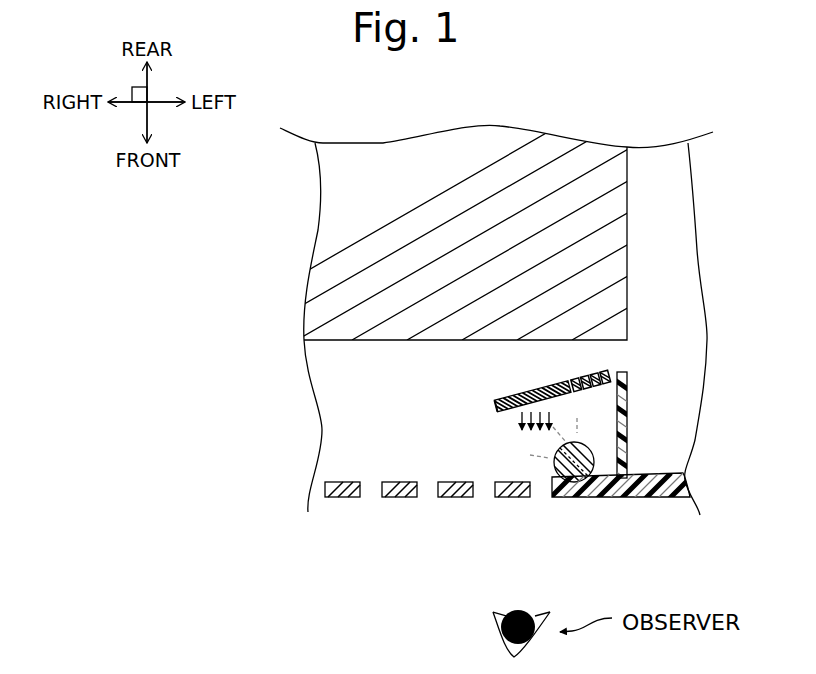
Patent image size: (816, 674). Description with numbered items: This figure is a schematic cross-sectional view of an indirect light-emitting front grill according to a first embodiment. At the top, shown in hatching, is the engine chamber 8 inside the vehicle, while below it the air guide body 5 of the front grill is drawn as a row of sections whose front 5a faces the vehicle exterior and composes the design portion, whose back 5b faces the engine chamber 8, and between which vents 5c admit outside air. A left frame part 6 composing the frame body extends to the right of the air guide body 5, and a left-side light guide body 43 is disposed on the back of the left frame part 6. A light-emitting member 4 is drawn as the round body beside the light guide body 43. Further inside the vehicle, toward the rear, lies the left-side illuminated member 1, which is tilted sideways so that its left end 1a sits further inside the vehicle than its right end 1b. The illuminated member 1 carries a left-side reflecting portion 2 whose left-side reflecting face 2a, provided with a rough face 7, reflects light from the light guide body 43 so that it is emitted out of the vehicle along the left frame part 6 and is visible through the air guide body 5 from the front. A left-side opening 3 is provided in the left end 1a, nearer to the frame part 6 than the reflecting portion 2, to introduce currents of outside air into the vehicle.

The left-side illuminated member 1 is at (548, 381).
The left end 1a is at (612, 367).
The right end 1b is at (494, 406).
The left-side reflecting portion 2 is at (531, 397).
The left-side reflecting face 2a is at (503, 438).
The rough face 7 is at (510, 416).
The left-side opening 3 is at (628, 333).
The light-emitting member 4 is at (603, 446).
The left-side light guide body 43 is at (553, 483).
The air guide body 5 is at (370, 505).
The front 5a is at (399, 501).
The back 5b is at (332, 475).
The vents 5c is at (373, 499).
The left frame part 6 is at (592, 498).
The engine chamber 8 is at (603, 236).